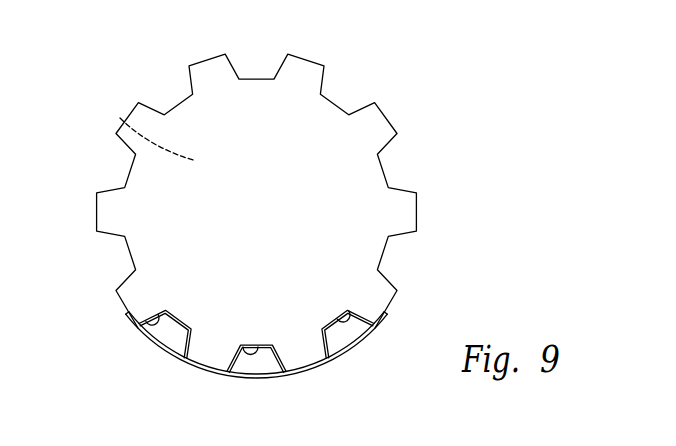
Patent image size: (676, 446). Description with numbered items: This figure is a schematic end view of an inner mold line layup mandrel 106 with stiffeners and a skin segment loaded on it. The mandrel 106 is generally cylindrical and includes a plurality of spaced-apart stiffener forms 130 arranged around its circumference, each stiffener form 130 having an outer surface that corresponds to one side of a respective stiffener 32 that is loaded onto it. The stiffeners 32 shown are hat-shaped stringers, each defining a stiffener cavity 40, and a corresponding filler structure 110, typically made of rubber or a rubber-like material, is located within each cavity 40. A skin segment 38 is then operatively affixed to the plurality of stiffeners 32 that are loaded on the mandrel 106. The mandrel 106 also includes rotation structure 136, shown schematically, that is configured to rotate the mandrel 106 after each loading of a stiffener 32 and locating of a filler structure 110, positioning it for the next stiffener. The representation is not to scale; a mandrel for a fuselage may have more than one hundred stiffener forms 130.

The inner mold line layup mandrel 106 is at (250, 188).
The stiffener form 130 is at (152, 107).
The rotation structure 136 is at (120, 118).
The skin segment 38 is at (235, 363).
The filler structure 110 is at (153, 347).
The stiffener 32 is at (256, 313).
The stiffener cavity 40 is at (165, 311).